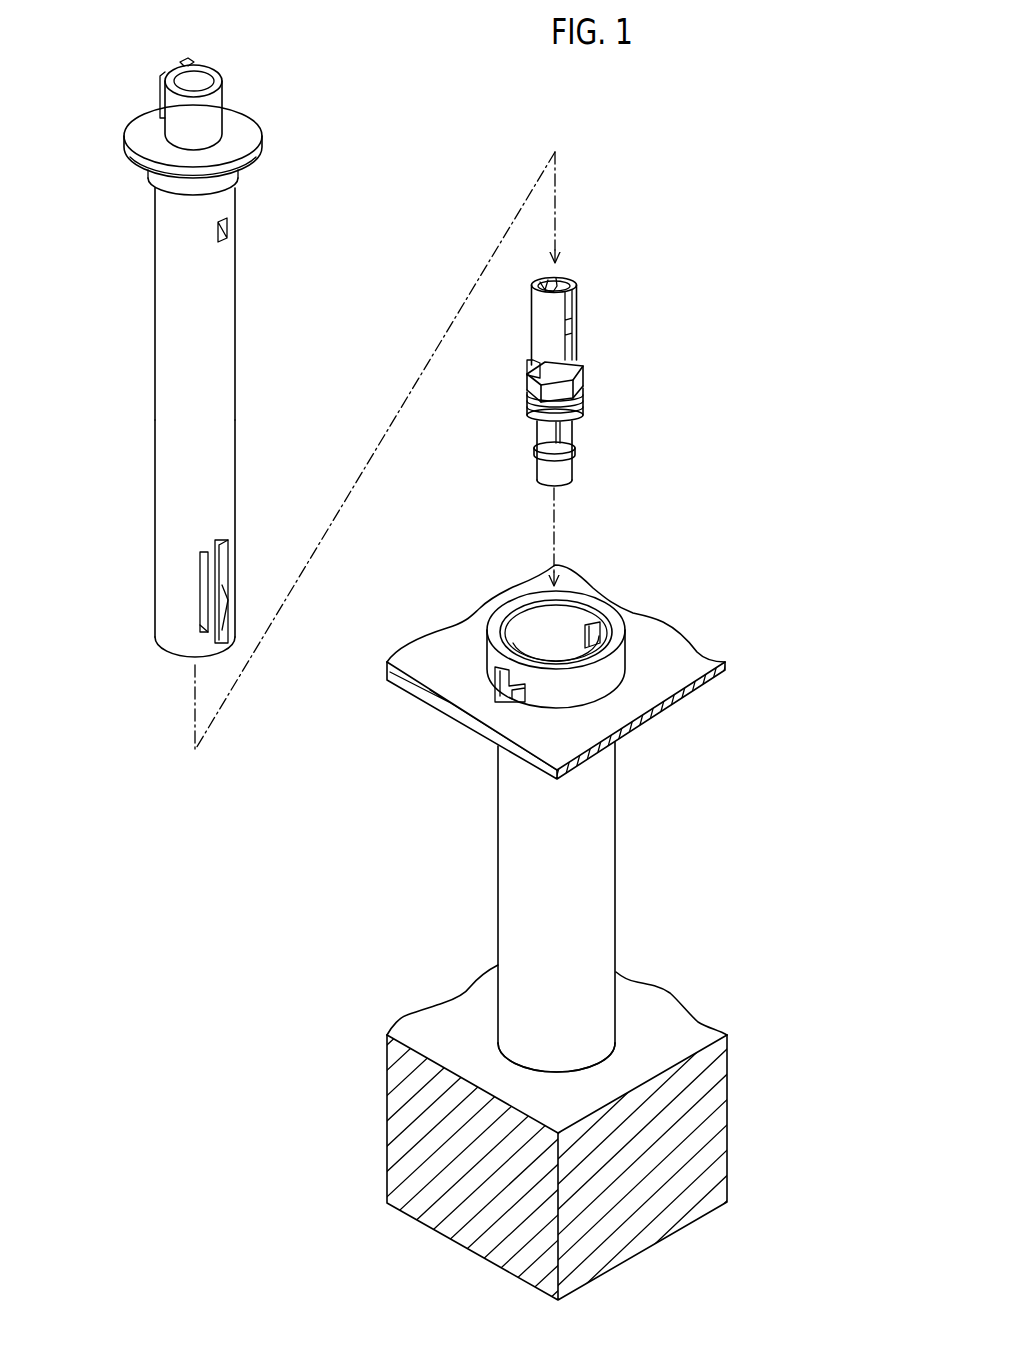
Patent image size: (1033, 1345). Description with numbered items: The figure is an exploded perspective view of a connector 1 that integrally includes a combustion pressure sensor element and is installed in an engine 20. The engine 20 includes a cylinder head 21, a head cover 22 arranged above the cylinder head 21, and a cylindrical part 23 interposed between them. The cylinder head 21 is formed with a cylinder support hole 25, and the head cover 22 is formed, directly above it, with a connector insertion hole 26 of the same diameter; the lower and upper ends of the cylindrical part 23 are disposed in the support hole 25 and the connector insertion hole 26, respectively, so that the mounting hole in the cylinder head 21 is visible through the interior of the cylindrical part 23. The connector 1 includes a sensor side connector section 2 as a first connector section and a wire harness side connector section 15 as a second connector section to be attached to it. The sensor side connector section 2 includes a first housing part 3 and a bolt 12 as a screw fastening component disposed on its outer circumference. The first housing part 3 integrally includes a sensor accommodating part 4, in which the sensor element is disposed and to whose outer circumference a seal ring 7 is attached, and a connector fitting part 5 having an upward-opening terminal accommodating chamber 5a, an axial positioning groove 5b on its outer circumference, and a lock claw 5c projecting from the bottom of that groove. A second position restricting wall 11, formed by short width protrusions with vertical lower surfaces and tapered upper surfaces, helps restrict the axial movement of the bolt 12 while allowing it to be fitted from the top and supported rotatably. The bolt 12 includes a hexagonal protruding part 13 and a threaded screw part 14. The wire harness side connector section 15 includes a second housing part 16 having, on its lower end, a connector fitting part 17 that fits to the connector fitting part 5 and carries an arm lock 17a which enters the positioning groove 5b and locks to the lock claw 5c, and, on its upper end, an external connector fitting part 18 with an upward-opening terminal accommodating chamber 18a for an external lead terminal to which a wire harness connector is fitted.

The connector 1 is at (433, 143).
The sensor side connector section 2 is at (518, 307).
The first housing part 3 is at (582, 340).
The sensor accommodating part 4 is at (566, 470).
The connector fitting part 5 is at (560, 311).
The terminal accommodating chamber 5a is at (565, 286).
The positioning groove 5b is at (568, 302).
The lock claw 5c is at (578, 323).
The seal ring 7 is at (538, 458).
The second position restricting wall 11 is at (529, 368).
The bolt 12 is at (673, 353).
The hexagonal protruding part 13 is at (580, 383).
The screw part 14 is at (584, 403).
The wire harness side connector section 15 is at (250, 270).
The second housing part 16 is at (166, 378).
The connector fitting part 17 is at (170, 610).
The arm lock 17a is at (222, 608).
The external connector fitting part 18 is at (182, 121).
The terminal accommodating chamber 18a is at (200, 83).
The engine 20 is at (370, 857).
The cylinder head 21 is at (710, 1119).
The head cover 22 is at (675, 662).
The cylindrical part 23 is at (604, 837).
The cylinder support hole 25 is at (612, 1048).
The connector insertion hole 26 is at (566, 622).